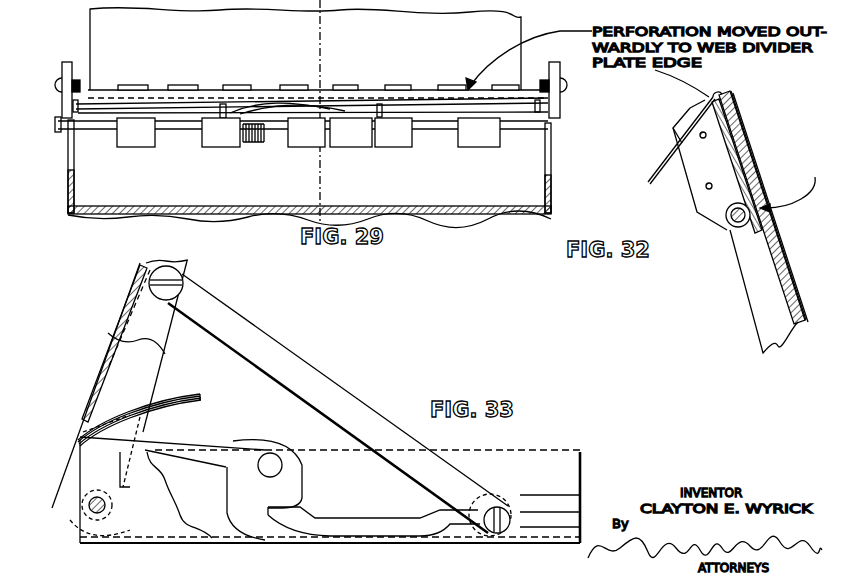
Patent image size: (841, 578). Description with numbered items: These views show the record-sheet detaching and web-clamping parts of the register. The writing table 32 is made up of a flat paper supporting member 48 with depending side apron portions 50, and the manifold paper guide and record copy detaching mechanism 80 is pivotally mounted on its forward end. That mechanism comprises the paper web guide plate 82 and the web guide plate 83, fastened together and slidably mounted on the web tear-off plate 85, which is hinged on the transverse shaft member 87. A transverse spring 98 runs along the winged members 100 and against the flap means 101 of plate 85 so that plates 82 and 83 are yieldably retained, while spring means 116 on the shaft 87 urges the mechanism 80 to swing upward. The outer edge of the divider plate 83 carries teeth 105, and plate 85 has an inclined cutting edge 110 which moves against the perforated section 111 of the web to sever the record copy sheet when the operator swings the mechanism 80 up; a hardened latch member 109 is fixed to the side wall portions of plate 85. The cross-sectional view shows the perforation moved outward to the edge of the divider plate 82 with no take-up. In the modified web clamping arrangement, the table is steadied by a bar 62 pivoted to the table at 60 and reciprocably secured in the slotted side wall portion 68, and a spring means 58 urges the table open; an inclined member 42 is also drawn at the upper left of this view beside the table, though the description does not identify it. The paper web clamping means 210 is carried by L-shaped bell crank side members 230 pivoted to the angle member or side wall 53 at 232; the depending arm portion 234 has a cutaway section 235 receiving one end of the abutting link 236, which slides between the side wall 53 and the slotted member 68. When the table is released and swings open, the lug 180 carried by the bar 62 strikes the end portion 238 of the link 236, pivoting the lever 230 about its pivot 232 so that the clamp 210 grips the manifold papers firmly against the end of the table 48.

In FIG. 29, the writing table 32 is at (305, 117).
In FIG. 29, the manifold paper guide and record copy detaching mechanism 80 is at (57, 61).
In FIG. 29, the side apron portions 50 is at (551, 200).
In FIG. 29, the teeth 105 is at (226, 85).
In FIG. 32, the teeth 105 is at (720, 92).
In FIG. 29, the perforated section 111 is at (118, 88).
In FIG. 29, the web guide plate 83 is at (198, 90).
In FIG. 32, the web guide plate 83 is at (762, 200).
In FIG. 29, the inclined cutting edge 110 is at (440, 100).
In FIG. 29, the web tear-off plate 85 is at (490, 106).
In FIG. 32, the web tear-off plate 85 is at (728, 155).
In FIG. 29, the transverse spring 98 is at (275, 106).
In FIG. 29, the flap means 101 is at (316, 114).
In FIG. 29, the winged members 100 is at (218, 110).
In FIG. 29, the spring means 116 is at (256, 143).
In FIG. 32, the spring means 116 is at (732, 180).
In FIG. 29, the transverse shaft member 87 is at (433, 132).
In FIG. 32, the transverse shaft member 87 is at (746, 216).
In FIG. 29, the paper supporting member 48 is at (222, 172).
In FIG. 32, the paper web guide plate 82 is at (752, 140).
In FIG. 32, the latch member 109 is at (705, 206).
In FIG. 33, the arm 42 is at (138, 321).
In FIG. 33, the pivot 60 is at (184, 280).
In FIG. 33, the bar 62 is at (332, 394).
In FIG. 33, the side wall portion 68 is at (580, 499).
In FIG. 33, the L-shaped bell crank side members 230 is at (218, 428).
In FIG. 33, the paper web clamping means 210 is at (77, 439).
In FIG. 33, the spring means 58 is at (84, 482).
In FIG. 33, the angle members 53 is at (314, 461).
In FIG. 33, the pivot 232 is at (272, 452).
In FIG. 33, the depending arm portion 234 is at (296, 497).
In FIG. 33, the cutaway section 235 is at (303, 508).
In FIG. 33, the abutting link 236 is at (372, 527).
In FIG. 33, the end portion 238 is at (484, 494).
In FIG. 33, the lug 180 is at (498, 507).